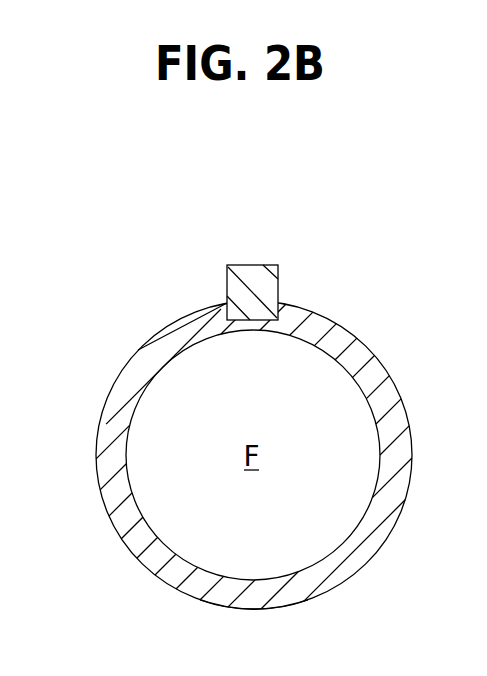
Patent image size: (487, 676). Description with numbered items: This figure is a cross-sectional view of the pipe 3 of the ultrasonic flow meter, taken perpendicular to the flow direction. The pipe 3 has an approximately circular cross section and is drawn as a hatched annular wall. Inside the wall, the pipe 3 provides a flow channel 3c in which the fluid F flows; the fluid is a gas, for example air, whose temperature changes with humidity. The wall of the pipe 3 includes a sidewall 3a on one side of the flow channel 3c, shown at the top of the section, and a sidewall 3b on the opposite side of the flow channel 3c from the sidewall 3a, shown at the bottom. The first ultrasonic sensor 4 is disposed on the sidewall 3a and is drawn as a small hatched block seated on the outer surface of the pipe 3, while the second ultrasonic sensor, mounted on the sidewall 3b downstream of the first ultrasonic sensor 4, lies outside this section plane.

The pipe 3 is at (284, 460).
The sidewall 3a is at (207, 303).
The sidewall 3b is at (253, 610).
The flow channel 3c is at (332, 436).
The first ultrasonic sensor 4 is at (250, 272).